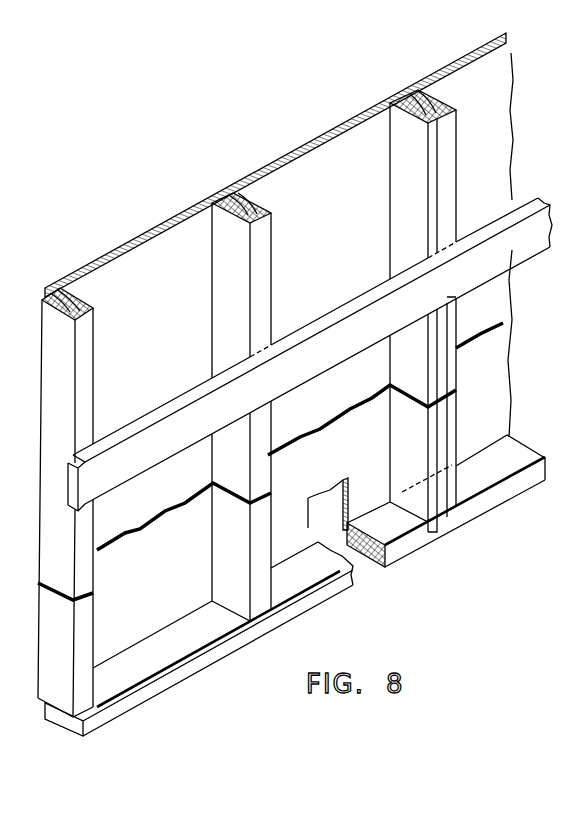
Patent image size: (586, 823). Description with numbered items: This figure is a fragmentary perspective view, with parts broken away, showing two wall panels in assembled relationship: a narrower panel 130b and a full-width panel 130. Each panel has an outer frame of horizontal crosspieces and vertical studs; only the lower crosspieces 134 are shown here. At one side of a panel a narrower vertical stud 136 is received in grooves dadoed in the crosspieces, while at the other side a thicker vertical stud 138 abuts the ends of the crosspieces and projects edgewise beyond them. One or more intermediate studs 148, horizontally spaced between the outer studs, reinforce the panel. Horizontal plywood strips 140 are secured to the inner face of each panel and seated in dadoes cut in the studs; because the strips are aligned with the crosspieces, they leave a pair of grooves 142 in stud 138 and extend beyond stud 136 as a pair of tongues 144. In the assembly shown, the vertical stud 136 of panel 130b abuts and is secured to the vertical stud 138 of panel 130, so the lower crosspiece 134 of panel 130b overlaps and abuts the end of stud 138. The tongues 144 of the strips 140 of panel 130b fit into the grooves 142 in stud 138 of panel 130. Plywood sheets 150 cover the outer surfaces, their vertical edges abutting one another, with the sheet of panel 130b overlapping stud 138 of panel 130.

The wall panel 130 is at (510, 501).
The narrower wall panel 130b is at (304, 614).
The lower crosspiece 134 is at (512, 458).
The vertical stud 136 is at (410, 121).
The vertical stud 138 is at (80, 296).
The horizontal strips 140 is at (533, 222).
The grooves 142 is at (72, 480).
The tongues 144 is at (440, 277).
The intermediate stud 148 is at (262, 292).
The plywood sheets 150 is at (358, 142).